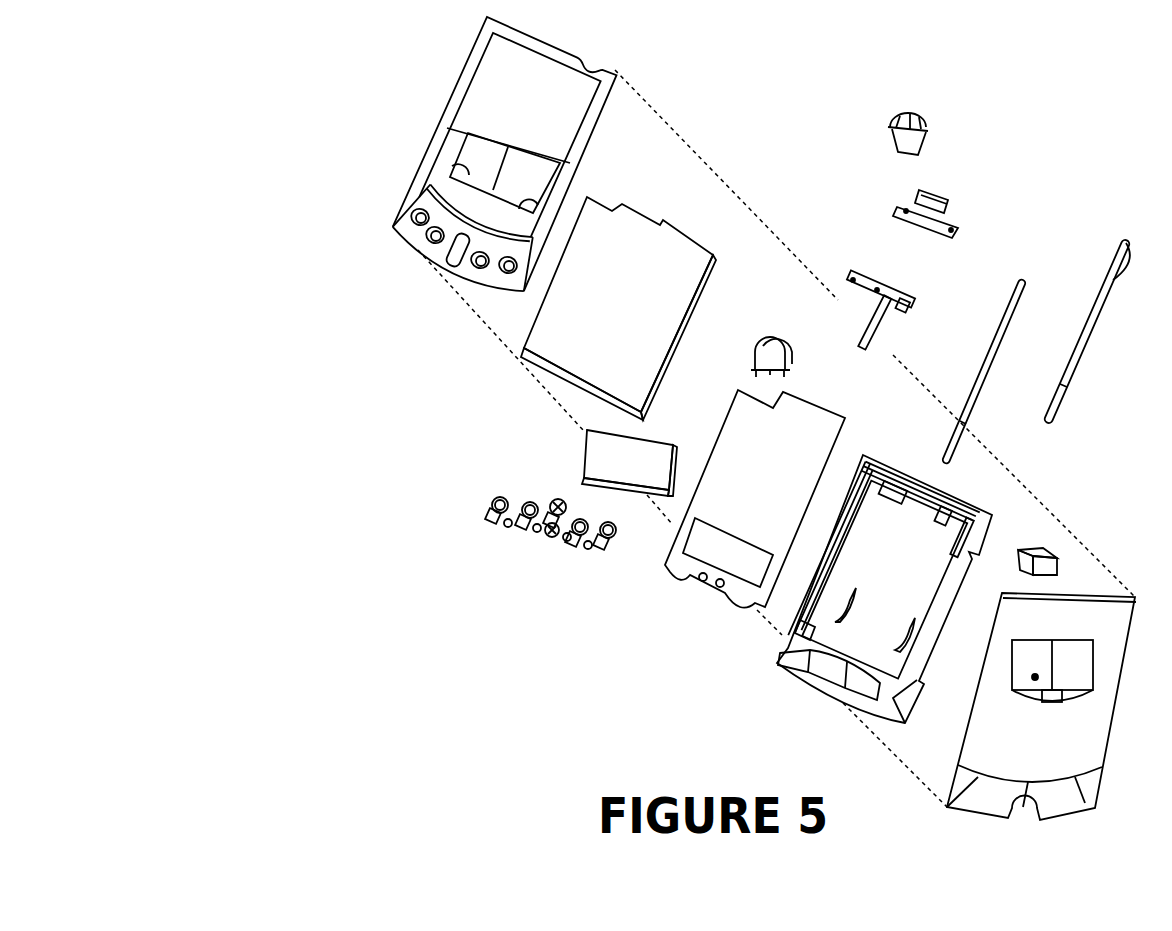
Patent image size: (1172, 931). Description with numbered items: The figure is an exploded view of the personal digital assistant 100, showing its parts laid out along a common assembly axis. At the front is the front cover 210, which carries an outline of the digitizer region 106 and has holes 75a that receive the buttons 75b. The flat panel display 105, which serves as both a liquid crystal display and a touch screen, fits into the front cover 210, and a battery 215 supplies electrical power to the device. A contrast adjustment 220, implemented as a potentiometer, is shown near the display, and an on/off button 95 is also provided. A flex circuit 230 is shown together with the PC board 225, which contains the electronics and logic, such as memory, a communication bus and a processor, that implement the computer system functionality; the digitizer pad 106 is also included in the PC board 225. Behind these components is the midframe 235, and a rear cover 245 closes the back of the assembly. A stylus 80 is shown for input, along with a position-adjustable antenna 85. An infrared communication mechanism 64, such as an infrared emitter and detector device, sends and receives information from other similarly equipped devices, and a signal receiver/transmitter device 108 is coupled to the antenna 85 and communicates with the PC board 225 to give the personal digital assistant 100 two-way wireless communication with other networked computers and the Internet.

The personal digital assistant 100 is at (253, 54).
The front cover 210 is at (553, 118).
The digitizer pad 106 is at (463, 158).
The holes 75a is at (413, 212).
The flat panel display 105 is at (636, 314).
The battery 215 is at (644, 470).
The buttons 75b is at (503, 497).
The contrast adjustment 220 is at (768, 333).
The PC board 225 is at (782, 484).
The midframe 235 is at (914, 580).
The receiver/transmitter device 108 is at (1033, 548).
The back cover 245 is at (1057, 753).
The on/off button 95 is at (930, 115).
The infrared communication mechanism 64 is at (944, 192).
The flex circuit 230 is at (899, 279).
The position-adjustable antenna 85 is at (1013, 335).
The stylus 80 is at (1108, 312).